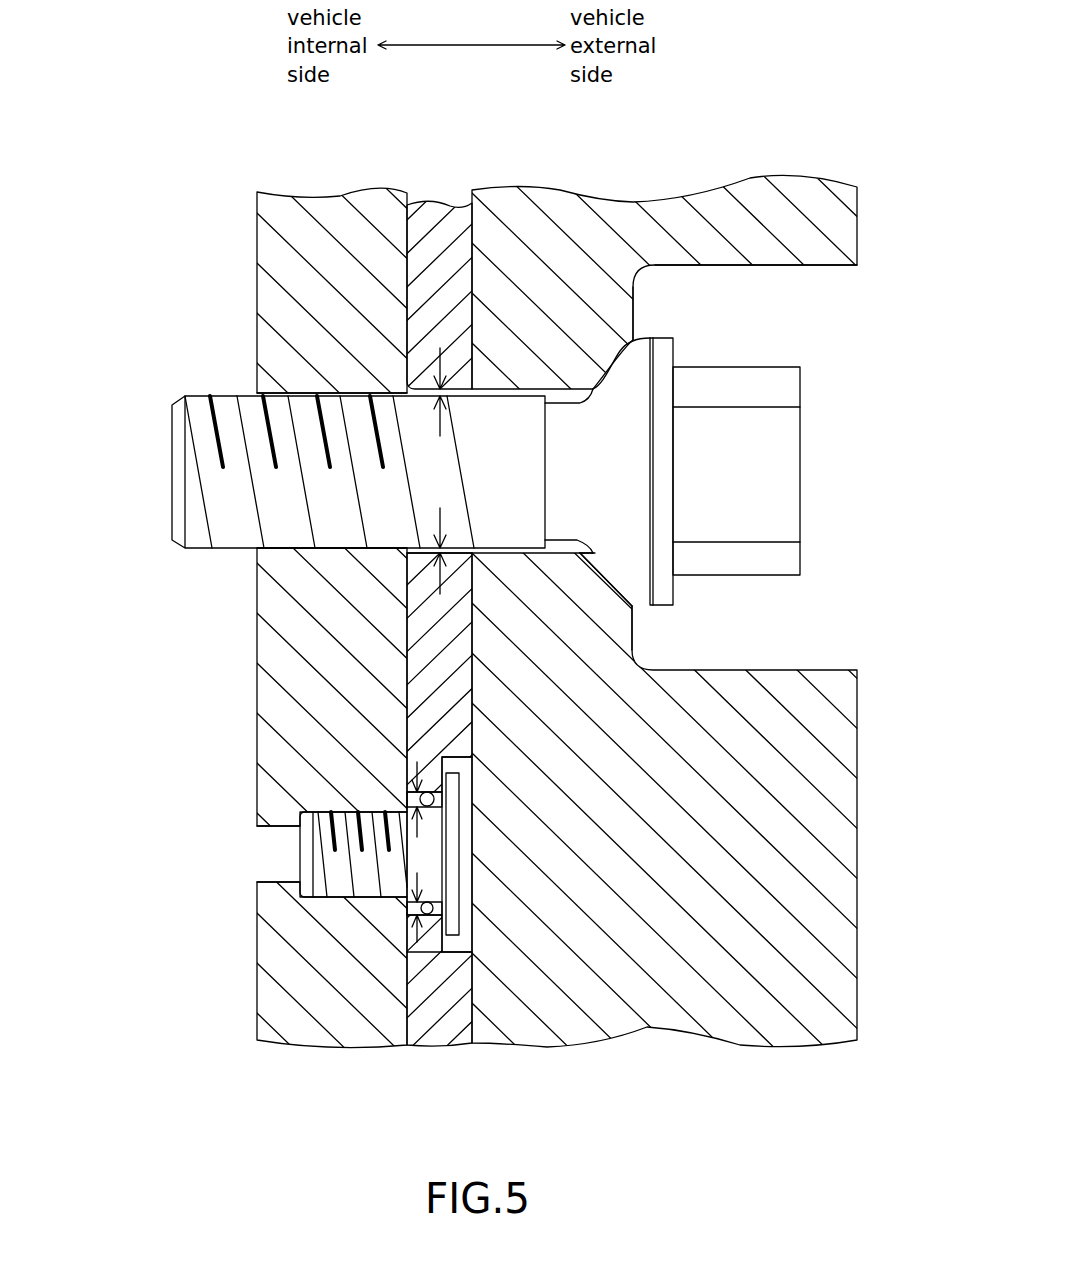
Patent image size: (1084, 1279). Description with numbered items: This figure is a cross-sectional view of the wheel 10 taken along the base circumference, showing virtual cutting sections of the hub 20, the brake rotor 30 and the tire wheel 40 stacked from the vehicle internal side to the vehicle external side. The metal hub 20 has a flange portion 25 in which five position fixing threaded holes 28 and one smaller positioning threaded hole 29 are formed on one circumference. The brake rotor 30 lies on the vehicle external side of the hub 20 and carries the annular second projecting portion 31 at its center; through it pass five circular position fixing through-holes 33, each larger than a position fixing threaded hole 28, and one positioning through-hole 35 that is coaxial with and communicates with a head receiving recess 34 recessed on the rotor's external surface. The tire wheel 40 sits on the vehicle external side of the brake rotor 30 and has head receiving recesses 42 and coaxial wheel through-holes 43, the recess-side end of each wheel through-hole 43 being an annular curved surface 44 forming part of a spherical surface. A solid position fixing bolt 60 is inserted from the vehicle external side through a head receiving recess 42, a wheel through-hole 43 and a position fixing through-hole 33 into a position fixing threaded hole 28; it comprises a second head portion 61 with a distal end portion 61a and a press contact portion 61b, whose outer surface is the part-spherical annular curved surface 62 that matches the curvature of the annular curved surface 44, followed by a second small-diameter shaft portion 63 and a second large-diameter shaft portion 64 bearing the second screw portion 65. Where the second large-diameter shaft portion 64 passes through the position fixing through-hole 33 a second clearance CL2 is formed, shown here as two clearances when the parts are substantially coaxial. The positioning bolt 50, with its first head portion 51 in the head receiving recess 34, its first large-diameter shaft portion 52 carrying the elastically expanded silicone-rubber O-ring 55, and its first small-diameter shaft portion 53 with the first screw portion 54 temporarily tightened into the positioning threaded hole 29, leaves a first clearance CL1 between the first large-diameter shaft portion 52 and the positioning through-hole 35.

The wheel 10 is at (762, 165).
The hub 20 is at (282, 611).
The flange portion 25 is at (262, 236).
The position fixing threaded hole 28 is at (275, 546).
The positioning threaded hole 29 is at (330, 893).
The brake rotor 30 is at (346, 646).
The second projecting portion 31 is at (438, 1008).
The position fixing through-hole 33 is at (418, 548).
The head receiving recess 34 is at (482, 958).
The positioning through-hole 35 is at (410, 908).
The tire wheel 40 is at (688, 1027).
The head receiving recess 42 is at (823, 268).
The wheel through-hole 43 is at (570, 540).
The annular curved surface 44 is at (615, 582).
The positioning bolt 50 is at (581, 872).
The first head portion 51 is at (581, 872).
The first large-diameter shaft portion 52 is at (435, 877).
The first small-diameter shaft portion 53 is at (272, 854).
The first screw portion 54 is at (323, 842).
The O-ring 55 is at (430, 907).
The position fixing bolt 60 is at (550, 444).
The second head portion 61 is at (750, 479).
The distal end portion 61a is at (773, 474).
The press contact portion 61b is at (573, 470).
The annular curved surface 62 is at (618, 357).
The second small-diameter shaft portion 63 is at (623, 520).
The second large-diameter shaft portion 64 is at (358, 425).
The second screw portion 65 is at (305, 404).
The first clearance CL1 is at (413, 772).
The second clearance CL2 is at (448, 366).